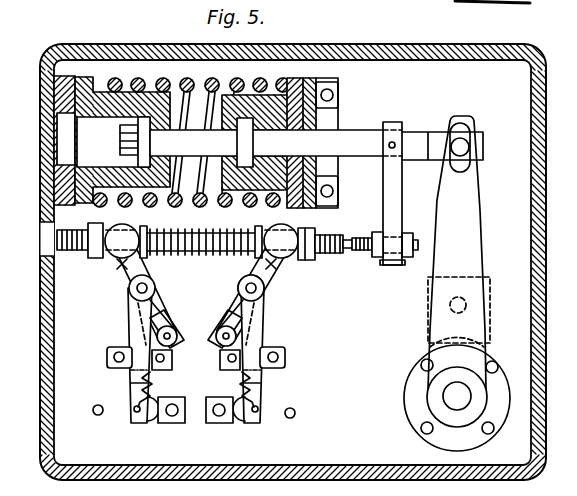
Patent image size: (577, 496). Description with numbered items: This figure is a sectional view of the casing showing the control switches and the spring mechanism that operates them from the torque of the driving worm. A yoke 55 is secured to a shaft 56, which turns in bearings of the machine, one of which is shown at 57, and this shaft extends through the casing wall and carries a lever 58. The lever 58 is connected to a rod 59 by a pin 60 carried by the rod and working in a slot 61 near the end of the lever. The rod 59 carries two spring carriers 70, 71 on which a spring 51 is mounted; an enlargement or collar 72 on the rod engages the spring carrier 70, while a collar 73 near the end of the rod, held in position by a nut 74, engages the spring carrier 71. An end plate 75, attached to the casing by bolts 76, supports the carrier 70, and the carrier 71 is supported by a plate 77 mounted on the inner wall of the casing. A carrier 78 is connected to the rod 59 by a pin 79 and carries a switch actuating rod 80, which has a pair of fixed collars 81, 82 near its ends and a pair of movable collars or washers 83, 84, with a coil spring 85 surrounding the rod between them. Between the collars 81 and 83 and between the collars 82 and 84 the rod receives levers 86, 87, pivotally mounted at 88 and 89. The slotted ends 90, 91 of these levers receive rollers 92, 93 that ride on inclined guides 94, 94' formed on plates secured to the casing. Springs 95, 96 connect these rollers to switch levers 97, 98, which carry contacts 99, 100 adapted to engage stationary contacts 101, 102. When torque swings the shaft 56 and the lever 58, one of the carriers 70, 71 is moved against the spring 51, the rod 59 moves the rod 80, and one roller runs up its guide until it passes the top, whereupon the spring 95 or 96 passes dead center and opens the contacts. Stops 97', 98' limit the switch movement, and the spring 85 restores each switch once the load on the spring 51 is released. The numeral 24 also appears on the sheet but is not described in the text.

The arm 24 is at (530, 3).
The spring 51 is at (116, 78).
The yoke 55 is at (488, 318).
The shaft 56 is at (472, 393).
The bearing 57 is at (466, 304).
The lever 58 is at (463, 193).
The rod 59 is at (414, 140).
The pin 60 is at (468, 147).
The slot 61 is at (469, 127).
The spring carrier 70 is at (273, 96).
The spring carrier 71 is at (130, 92).
The collar 72 is at (244, 120).
The collar 73 is at (122, 142).
The nut 74 is at (121, 130).
The end plate 75 is at (310, 82).
The bolts 76 is at (333, 96).
The plate 77 is at (64, 78).
The carrier 78 is at (392, 183).
The pin 79 is at (394, 142).
The switch actuating rod 80 is at (356, 257).
The collar 81 is at (306, 262).
The collar 82 is at (99, 259).
The movable collar 83 is at (258, 258).
The movable collar 84 is at (145, 258).
The coil spring 85 is at (240, 229).
The lever 86 is at (263, 291).
The lever 87 is at (122, 271).
The pivot 88 is at (262, 318).
The pivot 89 is at (130, 292).
The slot 90 is at (230, 327).
The slot 91 is at (172, 328).
The roller 92 is at (196, 359).
The roller 93 is at (181, 336).
The inclined guide 94 is at (280, 347).
The inclined guide 94' is at (106, 344).
The spring 95 is at (241, 376).
The spring 96 is at (154, 382).
The switch lever 97 is at (274, 385).
The stop 97' is at (310, 421).
The switch lever 98 is at (117, 385).
The stop 98' is at (82, 424).
The contact 99 is at (242, 421).
The contact 100 is at (148, 421).
The stationary contact 101 is at (219, 423).
The stationary contact 102 is at (168, 423).